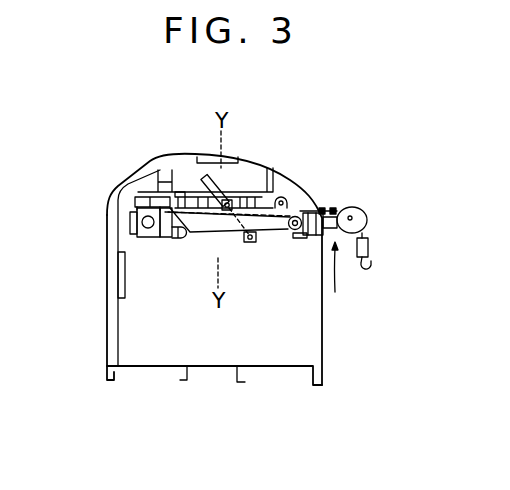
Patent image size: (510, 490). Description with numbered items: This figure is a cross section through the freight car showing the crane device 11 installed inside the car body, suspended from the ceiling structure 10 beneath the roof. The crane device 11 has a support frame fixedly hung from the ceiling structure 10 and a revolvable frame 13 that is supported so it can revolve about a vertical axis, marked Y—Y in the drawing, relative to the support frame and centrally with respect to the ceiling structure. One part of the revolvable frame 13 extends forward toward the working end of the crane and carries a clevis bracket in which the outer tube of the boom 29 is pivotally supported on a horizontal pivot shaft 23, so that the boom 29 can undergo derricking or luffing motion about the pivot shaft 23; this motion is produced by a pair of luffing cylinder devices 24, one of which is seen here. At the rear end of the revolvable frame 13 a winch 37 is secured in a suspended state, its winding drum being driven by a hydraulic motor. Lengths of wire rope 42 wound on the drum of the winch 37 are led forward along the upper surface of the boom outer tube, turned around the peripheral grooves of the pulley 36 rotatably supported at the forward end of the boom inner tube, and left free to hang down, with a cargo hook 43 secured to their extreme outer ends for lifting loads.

The ceiling structure 10 is at (289, 180).
The crane device 11 is at (351, 280).
The revolvable frame 13 is at (140, 200).
The horizontal pivot shaft 23 is at (283, 235).
The luffing cylinder device 24 is at (215, 183).
The boom 29 is at (316, 235).
The pulley 36 is at (363, 208).
The winch 37 is at (149, 238).
The wire rope 42 is at (326, 209).
The cargo hook 43 is at (374, 266).